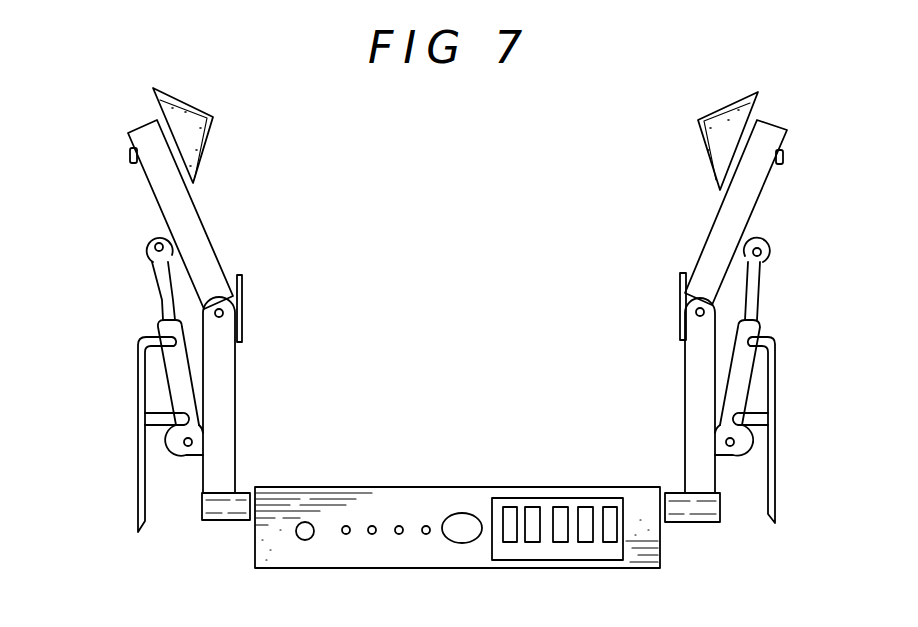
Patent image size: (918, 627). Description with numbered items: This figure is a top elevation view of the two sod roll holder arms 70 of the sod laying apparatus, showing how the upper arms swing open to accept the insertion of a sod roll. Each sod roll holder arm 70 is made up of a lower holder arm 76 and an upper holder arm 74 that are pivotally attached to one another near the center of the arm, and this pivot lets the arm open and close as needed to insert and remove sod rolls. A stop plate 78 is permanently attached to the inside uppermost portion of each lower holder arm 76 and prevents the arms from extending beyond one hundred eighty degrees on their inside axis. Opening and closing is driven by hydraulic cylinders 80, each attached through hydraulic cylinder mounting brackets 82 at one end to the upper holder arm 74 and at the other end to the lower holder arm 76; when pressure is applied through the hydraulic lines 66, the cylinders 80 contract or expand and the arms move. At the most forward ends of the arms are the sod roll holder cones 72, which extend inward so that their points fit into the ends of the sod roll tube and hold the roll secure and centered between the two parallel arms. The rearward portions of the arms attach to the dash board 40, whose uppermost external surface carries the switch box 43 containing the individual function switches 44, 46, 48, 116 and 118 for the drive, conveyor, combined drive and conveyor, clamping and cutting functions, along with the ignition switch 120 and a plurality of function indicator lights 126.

The sod roll holder arm 70 is at (96, 135).
The sod roll holder cone 72 is at (191, 124).
The upper holder arm 74 is at (171, 197).
The hydraulic cylinder mounting bracket 82 is at (139, 251).
The stop plate 78 is at (235, 283).
The hydraulic cylinder 80 is at (179, 377).
The hydraulic line 66 is at (129, 434).
The lower holder arm 76 is at (221, 474).
The dash board 40 is at (330, 480).
The ignition switch 120 is at (299, 516).
The function indicator lights 126 is at (377, 516).
The switch box 43 is at (486, 504).
The function switch 44 is at (511, 504).
The function switch 46 is at (533, 504).
The function switch 48 is at (562, 502).
The function switch 116 is at (588, 502).
The function switch 118 is at (610, 502).